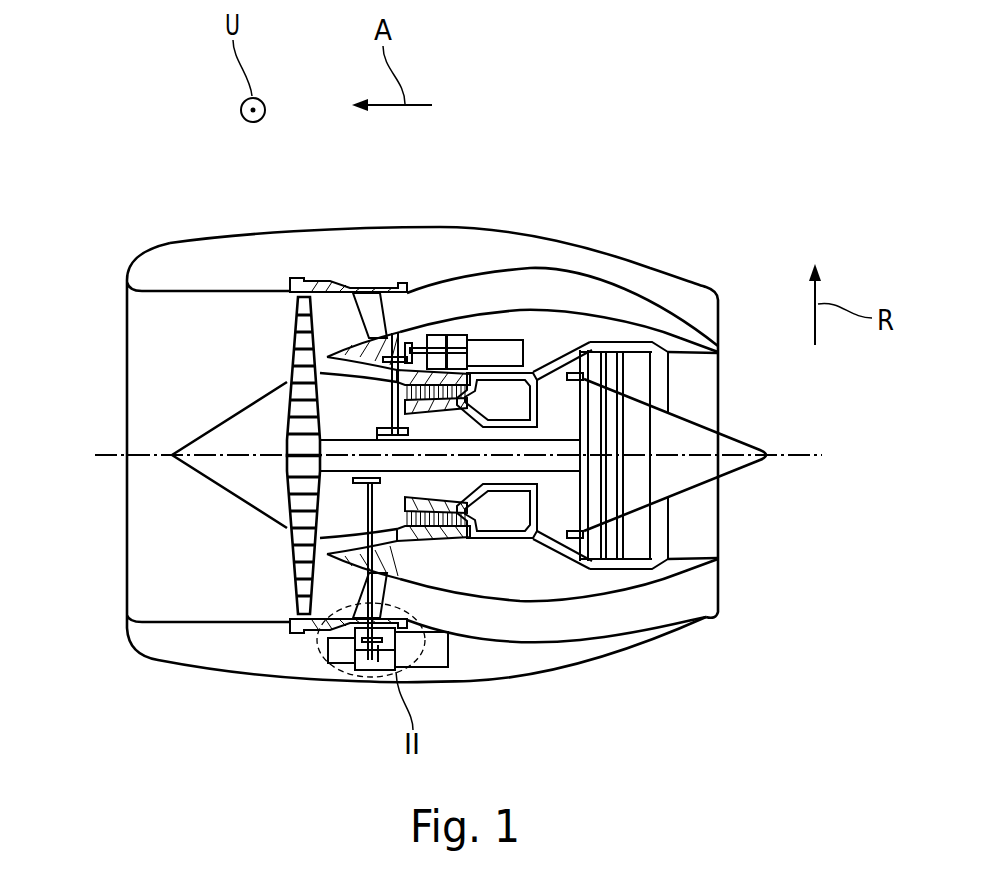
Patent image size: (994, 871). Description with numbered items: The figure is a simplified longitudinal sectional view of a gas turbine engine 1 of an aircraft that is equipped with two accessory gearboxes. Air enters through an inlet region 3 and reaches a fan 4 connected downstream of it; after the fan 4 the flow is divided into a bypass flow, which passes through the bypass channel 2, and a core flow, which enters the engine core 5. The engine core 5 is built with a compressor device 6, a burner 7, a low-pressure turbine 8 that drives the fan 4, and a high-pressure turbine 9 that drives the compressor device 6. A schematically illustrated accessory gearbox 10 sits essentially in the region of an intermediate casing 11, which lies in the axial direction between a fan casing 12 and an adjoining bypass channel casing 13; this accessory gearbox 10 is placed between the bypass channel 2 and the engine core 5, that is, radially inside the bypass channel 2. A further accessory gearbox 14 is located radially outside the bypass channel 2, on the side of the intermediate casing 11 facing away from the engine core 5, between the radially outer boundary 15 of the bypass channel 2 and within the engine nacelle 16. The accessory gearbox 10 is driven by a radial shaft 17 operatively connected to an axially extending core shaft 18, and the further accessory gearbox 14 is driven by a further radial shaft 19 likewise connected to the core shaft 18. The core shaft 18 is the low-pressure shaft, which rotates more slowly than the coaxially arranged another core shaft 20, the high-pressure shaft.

The gas turbine engine 1 is at (127, 196).
The bypass channel 2 is at (505, 305).
The inlet region 3 is at (148, 352).
The fan 4 is at (297, 335).
The engine core 5 is at (348, 345).
The compressor device 6 is at (507, 392).
The burner 7 is at (542, 368).
The low-pressure turbine 8 is at (597, 360).
The high-pressure turbine 9 is at (550, 365).
The accessory gearbox 10 is at (458, 336).
The intermediate casing 11 is at (362, 285).
The fan casing 12 is at (300, 283).
The bypass channel casing 13 is at (440, 284).
The further accessory gearbox 14 is at (372, 677).
The radially outer boundary 15 is at (465, 645).
The engine nacelle 16 is at (148, 657).
The radial shaft 17 is at (390, 405).
The core shaft 18 is at (600, 499).
The further radial shaft 19 is at (353, 515).
The another core shaft 20 is at (533, 413).